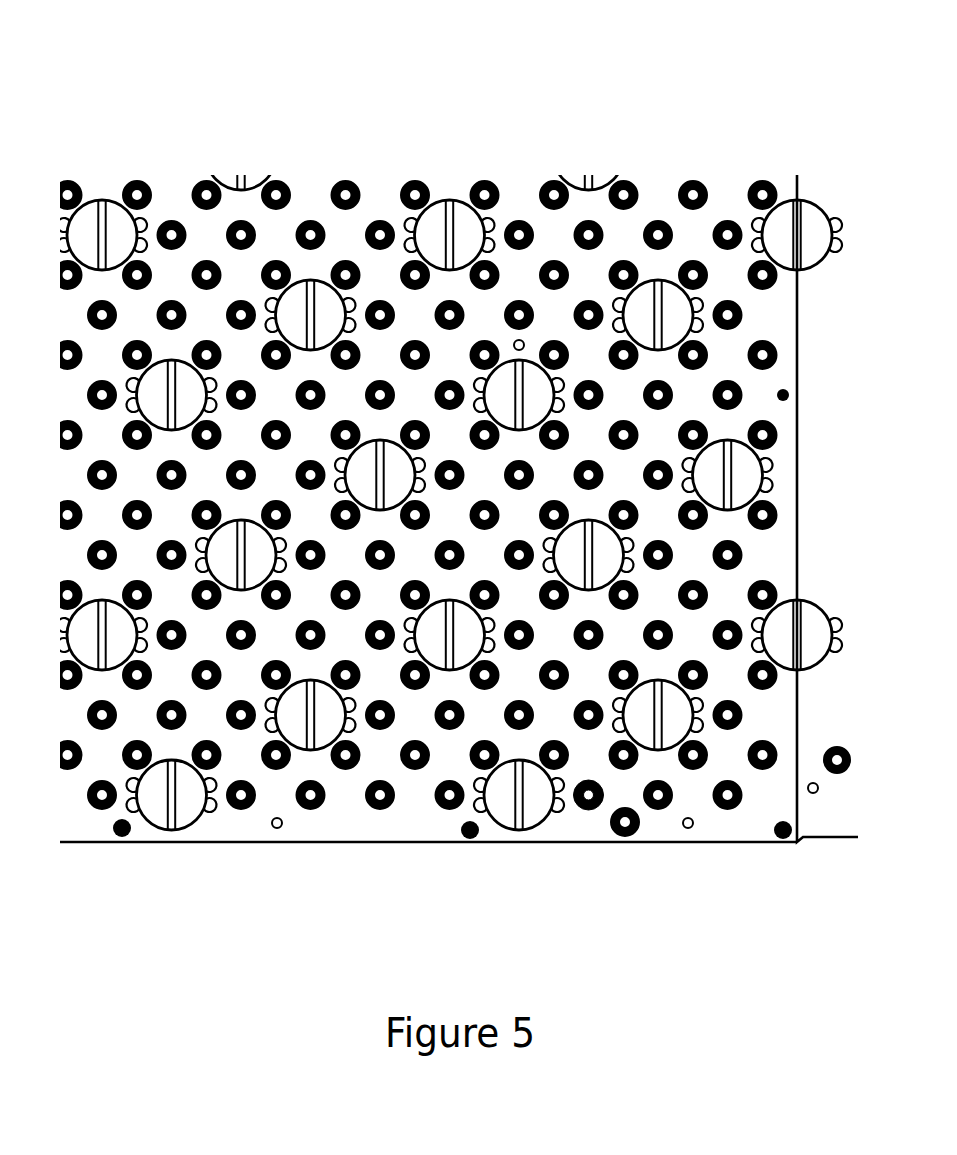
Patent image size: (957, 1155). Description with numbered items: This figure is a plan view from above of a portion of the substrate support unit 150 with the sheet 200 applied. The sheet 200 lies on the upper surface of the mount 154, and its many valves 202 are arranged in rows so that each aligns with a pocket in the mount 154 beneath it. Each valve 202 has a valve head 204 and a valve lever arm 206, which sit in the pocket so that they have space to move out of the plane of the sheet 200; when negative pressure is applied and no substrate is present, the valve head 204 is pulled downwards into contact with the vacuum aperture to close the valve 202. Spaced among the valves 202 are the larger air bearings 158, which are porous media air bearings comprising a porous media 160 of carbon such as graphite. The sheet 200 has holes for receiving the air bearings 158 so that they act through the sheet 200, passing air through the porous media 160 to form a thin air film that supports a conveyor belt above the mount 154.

The substrate support unit 150 is at (148, 85).
The mount 154 is at (839, 825).
The air bearing 158 is at (505, 813).
The porous media 160 is at (490, 798).
The sheet 200 is at (740, 832).
The valve 202 is at (589, 823).
The valve head 204 is at (586, 800).
The valve lever arm 206 is at (601, 804).